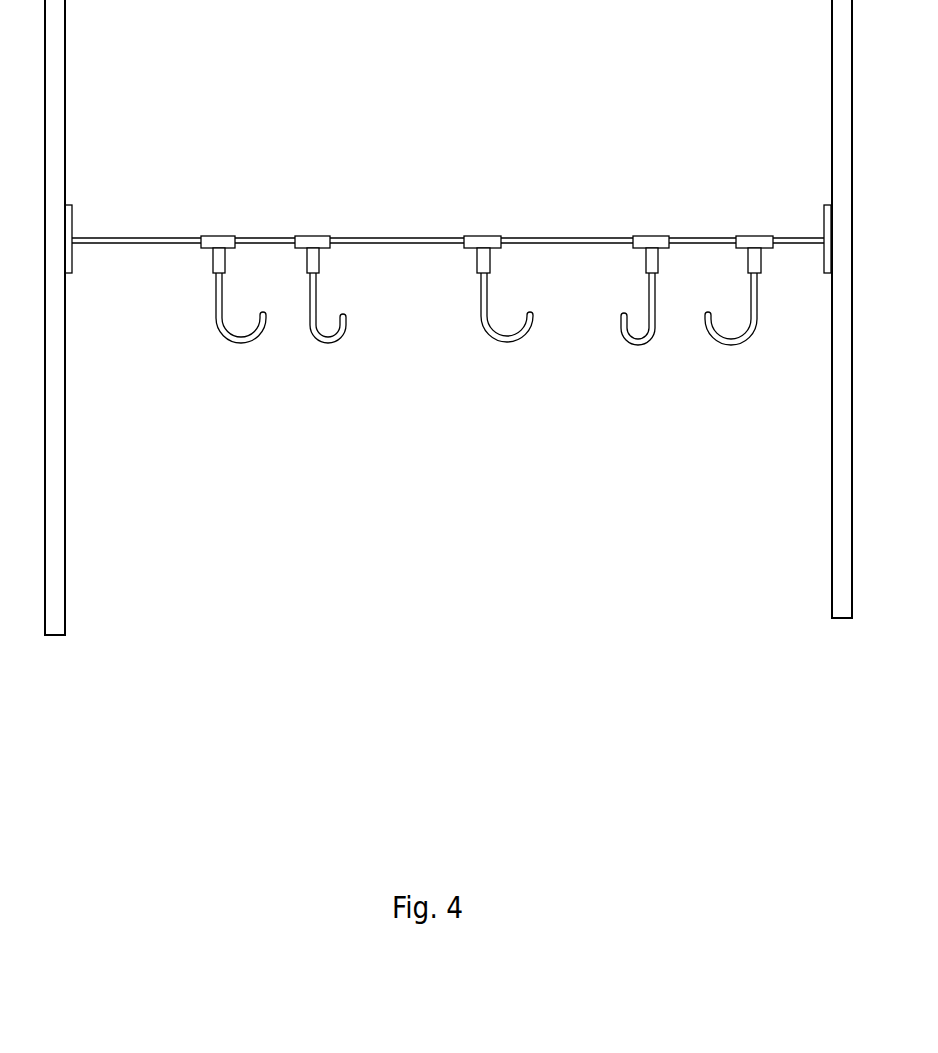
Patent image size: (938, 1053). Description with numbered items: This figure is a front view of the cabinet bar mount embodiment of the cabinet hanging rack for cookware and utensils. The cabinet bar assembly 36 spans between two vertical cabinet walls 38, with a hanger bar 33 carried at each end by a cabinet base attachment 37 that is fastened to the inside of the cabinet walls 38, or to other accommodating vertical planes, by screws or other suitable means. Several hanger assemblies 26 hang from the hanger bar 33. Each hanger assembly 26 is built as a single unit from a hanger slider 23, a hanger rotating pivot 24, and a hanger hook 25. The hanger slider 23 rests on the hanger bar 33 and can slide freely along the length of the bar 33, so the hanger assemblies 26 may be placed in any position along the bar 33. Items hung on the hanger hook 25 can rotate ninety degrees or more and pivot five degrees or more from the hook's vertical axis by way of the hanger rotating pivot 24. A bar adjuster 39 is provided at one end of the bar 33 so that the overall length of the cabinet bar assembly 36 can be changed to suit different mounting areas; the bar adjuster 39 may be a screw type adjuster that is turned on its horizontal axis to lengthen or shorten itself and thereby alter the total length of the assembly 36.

The hanger slider 23 is at (454, 347).
The hanger rotating pivot 24 is at (478, 262).
The hanger hook 25 is at (513, 340).
The hanger assembly 26 is at (200, 248).
The hanger bar 33 is at (793, 241).
The cabinet bar assembly 36 is at (448, 277).
The cabinet base attachment 37 is at (73, 230).
The cabinet wall 38 is at (840, 52).
The bar adjuster 39 is at (124, 243).